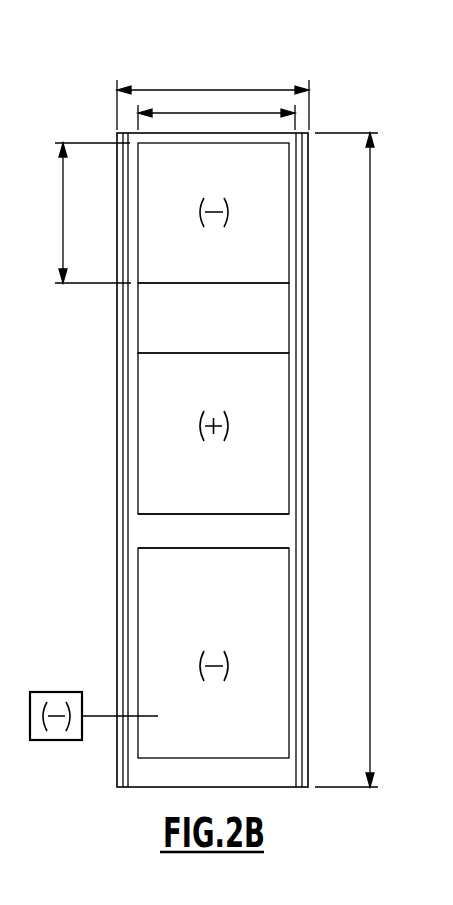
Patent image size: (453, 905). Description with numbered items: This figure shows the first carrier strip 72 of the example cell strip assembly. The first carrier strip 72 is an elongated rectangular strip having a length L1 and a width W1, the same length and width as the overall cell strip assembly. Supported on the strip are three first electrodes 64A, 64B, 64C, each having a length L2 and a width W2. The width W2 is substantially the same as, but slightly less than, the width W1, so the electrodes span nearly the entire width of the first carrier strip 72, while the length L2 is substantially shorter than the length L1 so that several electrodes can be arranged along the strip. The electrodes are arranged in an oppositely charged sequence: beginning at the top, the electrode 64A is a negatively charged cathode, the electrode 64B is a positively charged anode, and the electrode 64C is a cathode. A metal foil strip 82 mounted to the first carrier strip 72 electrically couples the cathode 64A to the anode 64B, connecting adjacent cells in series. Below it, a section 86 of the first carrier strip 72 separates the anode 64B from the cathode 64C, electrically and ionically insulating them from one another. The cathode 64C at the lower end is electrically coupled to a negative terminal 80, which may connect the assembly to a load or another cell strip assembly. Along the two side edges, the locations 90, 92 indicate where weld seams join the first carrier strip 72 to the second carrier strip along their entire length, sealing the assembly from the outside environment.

The first carrier strip 72 is at (222, 132).
The electrode 64A is at (162, 202).
The electrode 64B is at (157, 450).
The electrode 64C is at (165, 612).
The metal foil strip 82 is at (153, 322).
The section 86 is at (140, 530).
The weld seam location 90 is at (298, 528).
The weld seam location 92 is at (122, 650).
The terminal 80 is at (63, 740).
The length L1 is at (370, 360).
The length L2 is at (63, 193).
The width W1 is at (155, 88).
The width W2 is at (188, 112).